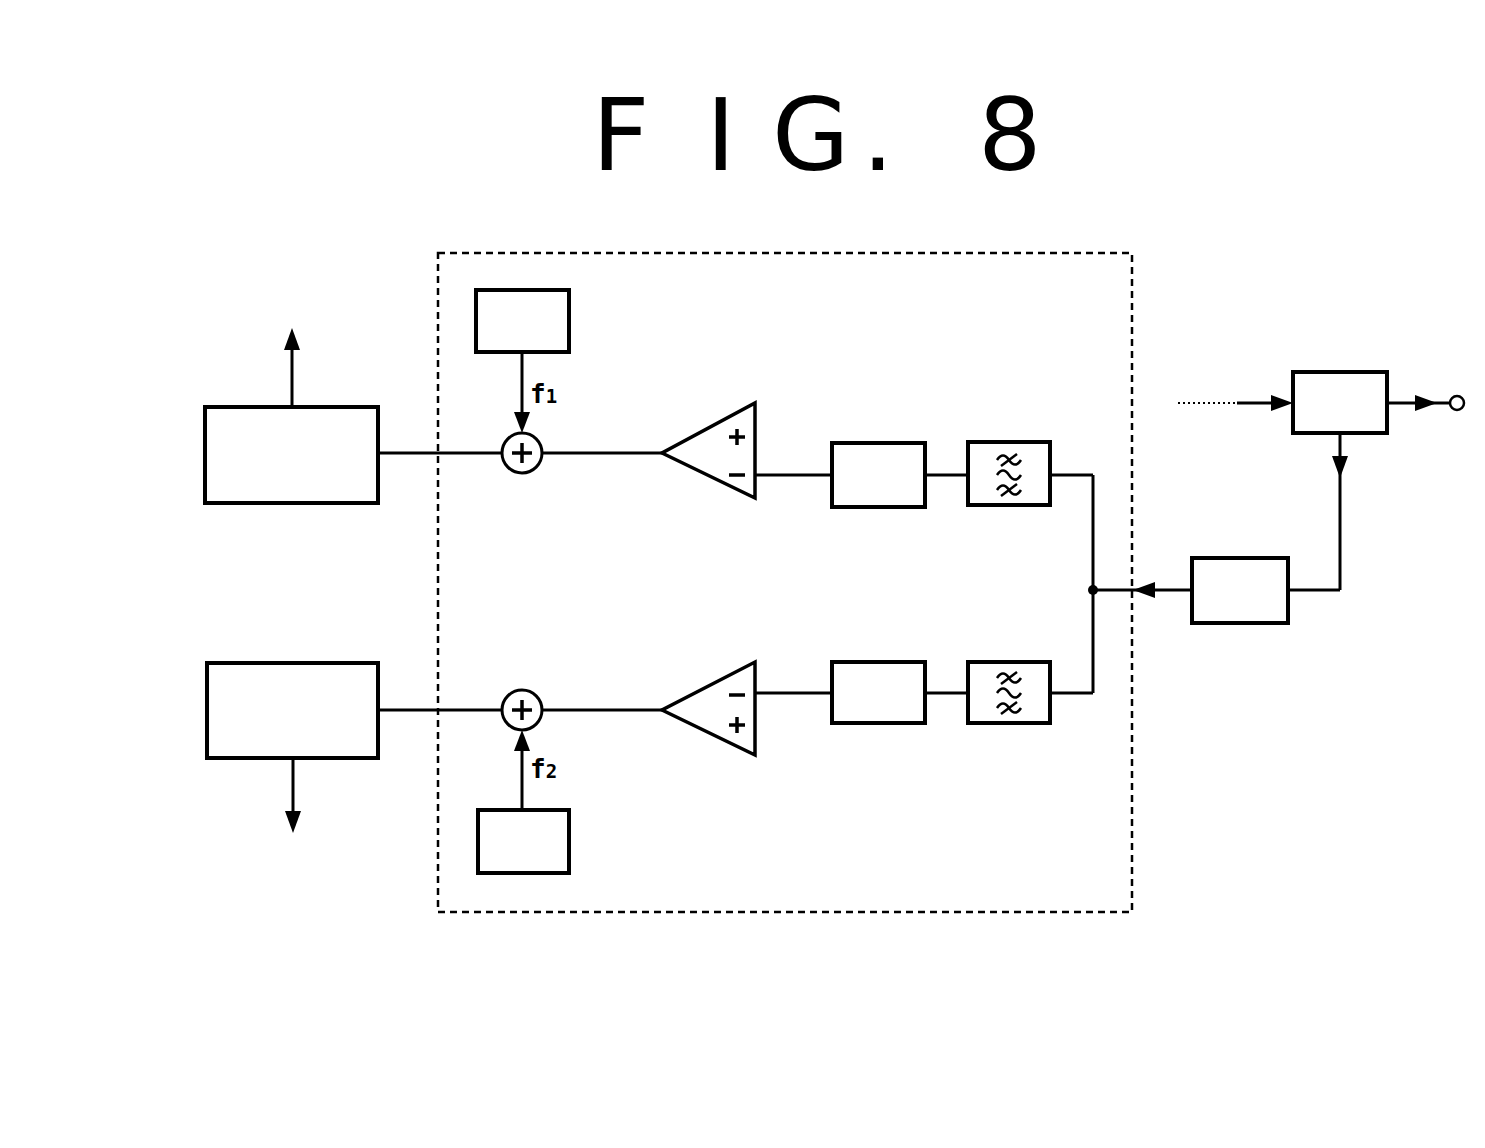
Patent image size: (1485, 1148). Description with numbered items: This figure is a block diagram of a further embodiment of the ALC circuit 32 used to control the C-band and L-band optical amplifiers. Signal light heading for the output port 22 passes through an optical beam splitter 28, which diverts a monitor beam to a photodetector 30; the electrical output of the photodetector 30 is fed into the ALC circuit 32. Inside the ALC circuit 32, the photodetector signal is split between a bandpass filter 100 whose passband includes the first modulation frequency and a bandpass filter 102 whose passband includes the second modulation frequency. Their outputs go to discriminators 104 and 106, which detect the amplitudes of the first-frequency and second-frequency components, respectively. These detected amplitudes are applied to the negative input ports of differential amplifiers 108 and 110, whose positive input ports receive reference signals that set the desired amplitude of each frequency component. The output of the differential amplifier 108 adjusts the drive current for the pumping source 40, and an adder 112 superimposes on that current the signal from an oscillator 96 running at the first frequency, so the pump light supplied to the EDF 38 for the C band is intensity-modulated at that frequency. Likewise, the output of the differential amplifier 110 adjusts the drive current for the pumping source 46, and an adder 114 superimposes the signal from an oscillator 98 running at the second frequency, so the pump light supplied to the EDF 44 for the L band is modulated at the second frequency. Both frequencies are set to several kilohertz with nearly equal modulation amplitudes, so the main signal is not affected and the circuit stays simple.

The output port 22 is at (1457, 396).
The optical beam splitter 28 is at (1340, 372).
The photodetector 30 is at (1240, 558).
The ALC circuit 32 is at (737, 912).
The EDF 38 is at (291, 337).
The pumping source 40 is at (293, 503).
The EDF 44 is at (292, 828).
The pumping source 46 is at (293, 663).
The oscillator 96 is at (569, 320).
The oscillator 98 is at (569, 840).
The bandpass filter 100 is at (1009, 442).
The bandpass filter 102 is at (1009, 662).
The discriminator 104 is at (878, 443).
The discriminator 106 is at (878, 662).
The differential amplifier 108 is at (702, 473).
The differential amplifier 110 is at (702, 732).
The adder 112 is at (522, 473).
The adder 114 is at (522, 690).